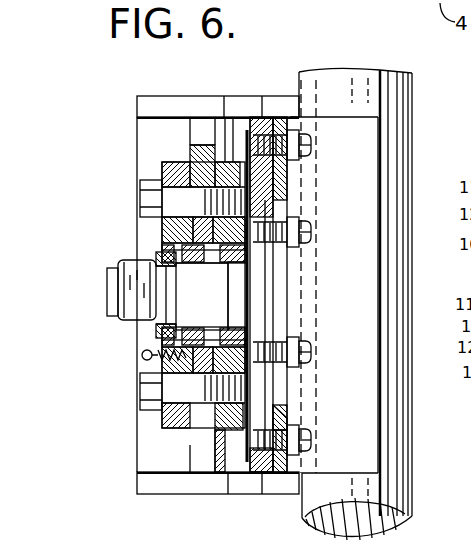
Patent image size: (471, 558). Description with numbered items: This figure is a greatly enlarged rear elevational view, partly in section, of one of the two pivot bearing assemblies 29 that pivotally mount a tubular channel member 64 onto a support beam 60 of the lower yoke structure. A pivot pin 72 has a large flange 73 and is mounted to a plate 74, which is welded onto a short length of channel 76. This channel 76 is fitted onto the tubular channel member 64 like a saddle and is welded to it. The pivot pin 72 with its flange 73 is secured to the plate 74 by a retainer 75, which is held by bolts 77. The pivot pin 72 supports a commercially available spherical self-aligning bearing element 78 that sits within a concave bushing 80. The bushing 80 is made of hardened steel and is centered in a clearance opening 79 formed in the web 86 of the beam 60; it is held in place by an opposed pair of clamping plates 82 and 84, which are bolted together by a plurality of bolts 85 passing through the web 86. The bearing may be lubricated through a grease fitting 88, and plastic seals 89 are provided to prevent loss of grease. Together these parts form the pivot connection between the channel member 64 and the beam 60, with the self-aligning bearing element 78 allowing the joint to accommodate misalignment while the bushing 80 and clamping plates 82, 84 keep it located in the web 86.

The support beam 60 is at (150, 96).
The web 86 is at (180, 150).
The clamping plate 84 is at (236, 150).
The clamping plate 82 is at (170, 165).
The bolt 85 is at (150, 195).
The clearance opening 79 is at (170, 222).
The concave bushing 80 is at (165, 250).
The plastic seal 89 is at (160, 345).
The spherical self-aligning bearing element 78 is at (203, 266).
The pivot pin 72 is at (112, 290).
The grease fitting 88 is at (145, 358).
The pivot bearing assembly 29 is at (85, 334).
The flange 73 is at (268, 288).
The plate 74 is at (288, 418).
The bolt 77 is at (306, 150).
The channel 76 is at (374, 420).
The tubular channel member 64 is at (412, 473).
The retainer 75 is at (262, 478).